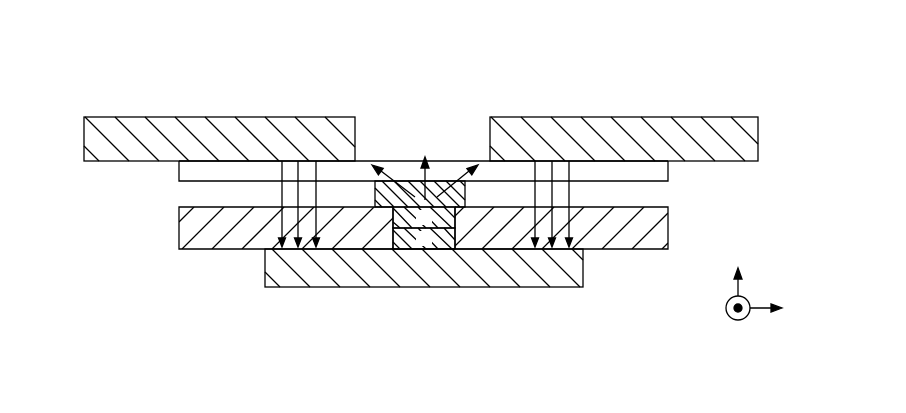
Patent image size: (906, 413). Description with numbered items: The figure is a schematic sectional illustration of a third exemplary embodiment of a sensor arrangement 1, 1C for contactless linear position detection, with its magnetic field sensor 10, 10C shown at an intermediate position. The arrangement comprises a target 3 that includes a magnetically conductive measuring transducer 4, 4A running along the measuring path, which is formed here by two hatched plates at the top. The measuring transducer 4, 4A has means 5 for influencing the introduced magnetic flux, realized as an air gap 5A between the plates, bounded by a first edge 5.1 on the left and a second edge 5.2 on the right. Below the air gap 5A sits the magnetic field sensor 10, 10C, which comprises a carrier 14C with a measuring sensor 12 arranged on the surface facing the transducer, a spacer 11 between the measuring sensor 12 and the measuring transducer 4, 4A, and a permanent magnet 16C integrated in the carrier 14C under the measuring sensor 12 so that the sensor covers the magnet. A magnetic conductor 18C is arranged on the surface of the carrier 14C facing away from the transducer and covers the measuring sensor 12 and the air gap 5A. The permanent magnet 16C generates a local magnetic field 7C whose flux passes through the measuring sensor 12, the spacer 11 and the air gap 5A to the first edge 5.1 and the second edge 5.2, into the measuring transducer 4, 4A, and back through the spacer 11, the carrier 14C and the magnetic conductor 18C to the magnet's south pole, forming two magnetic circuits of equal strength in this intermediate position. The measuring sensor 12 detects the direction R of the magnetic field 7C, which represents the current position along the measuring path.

The sensor arrangement 1 is at (428, 198).
The sensor arrangement 1C is at (141, 68).
The target 3 is at (732, 92).
The measuring transducer 4 is at (609, 113).
The measuring transducer 4A is at (633, 130).
The means 5 is at (422, 113).
The air gap 5A is at (421, 143).
The first edge 5.1 is at (370, 126).
The second edge 5.2 is at (475, 128).
The local magnetic field 7C is at (443, 84).
The direction of the magnetic field R is at (412, 192).
The measuring sensor 12 is at (433, 195).
The spacer 11 is at (212, 172).
The magnetic field sensor 10 is at (408, 201).
The magnetic field sensor 10C is at (135, 271).
The carrier 14C is at (648, 228).
The permanent magnet 16C is at (445, 250).
The magnetic conductor 18C is at (508, 275).